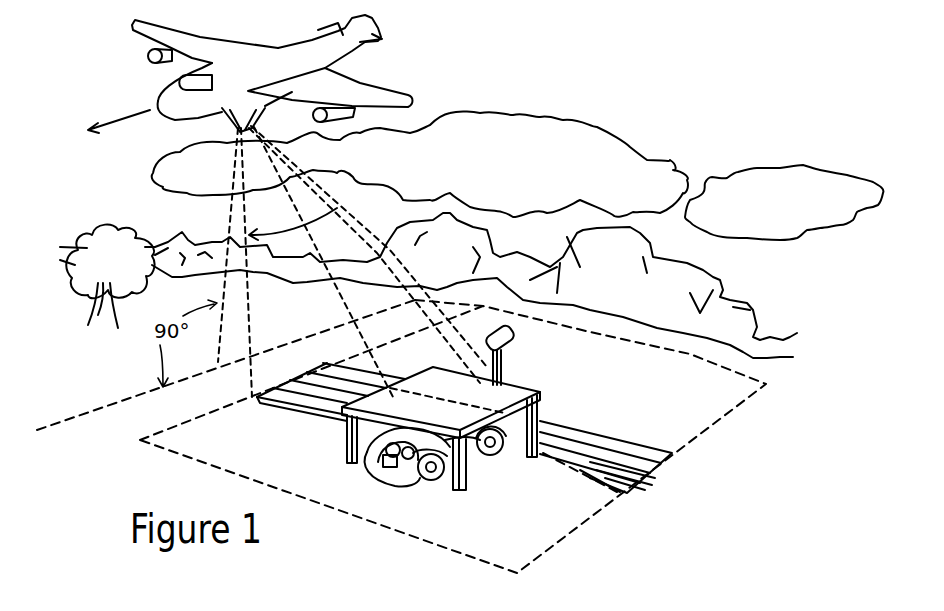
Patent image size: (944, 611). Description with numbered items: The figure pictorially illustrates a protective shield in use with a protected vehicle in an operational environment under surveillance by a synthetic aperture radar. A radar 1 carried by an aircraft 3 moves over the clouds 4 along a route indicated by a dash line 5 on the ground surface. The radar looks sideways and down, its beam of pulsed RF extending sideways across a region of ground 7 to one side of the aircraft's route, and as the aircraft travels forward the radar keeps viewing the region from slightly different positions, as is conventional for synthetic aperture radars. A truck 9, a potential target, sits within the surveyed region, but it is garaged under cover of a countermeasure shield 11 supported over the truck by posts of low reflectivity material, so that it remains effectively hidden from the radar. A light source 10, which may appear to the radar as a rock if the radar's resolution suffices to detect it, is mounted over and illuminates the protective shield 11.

The radar 1 is at (226, 121).
The aircraft 3 is at (278, 45).
The clouds 4 is at (521, 114).
The dash line 5 is at (130, 396).
The region of ground 7 is at (425, 542).
The truck 9 is at (472, 443).
The light source 10 is at (505, 338).
The countermeasure shield 11 is at (378, 397).